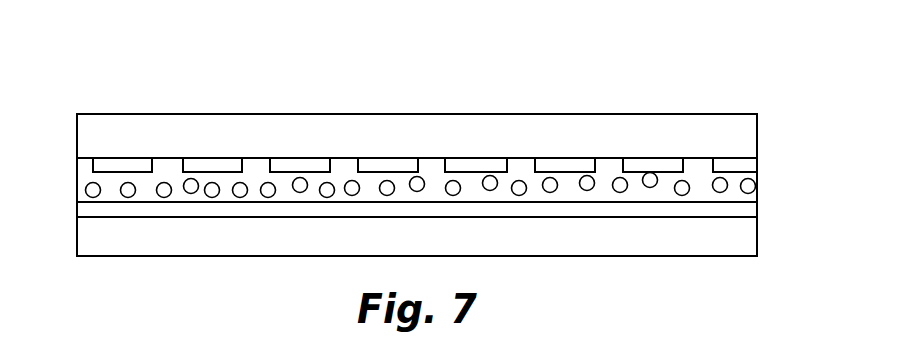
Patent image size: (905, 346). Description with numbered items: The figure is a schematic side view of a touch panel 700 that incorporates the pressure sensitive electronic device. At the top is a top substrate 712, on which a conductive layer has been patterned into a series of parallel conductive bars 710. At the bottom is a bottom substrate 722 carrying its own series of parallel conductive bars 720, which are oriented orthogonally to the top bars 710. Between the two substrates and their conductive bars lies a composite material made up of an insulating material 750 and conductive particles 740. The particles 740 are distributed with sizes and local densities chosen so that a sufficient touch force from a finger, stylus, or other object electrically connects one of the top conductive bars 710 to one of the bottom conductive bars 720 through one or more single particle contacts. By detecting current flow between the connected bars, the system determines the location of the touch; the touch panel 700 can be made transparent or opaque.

The touch panel 700 is at (653, 53).
The top conductive bars 710 is at (190, 162).
The top substrate 712 is at (685, 121).
The bottom conductive bars 720 is at (85, 212).
The bottom substrate 722 is at (688, 250).
The conductive particles 740 is at (351, 181).
The insulating material 750 is at (433, 166).